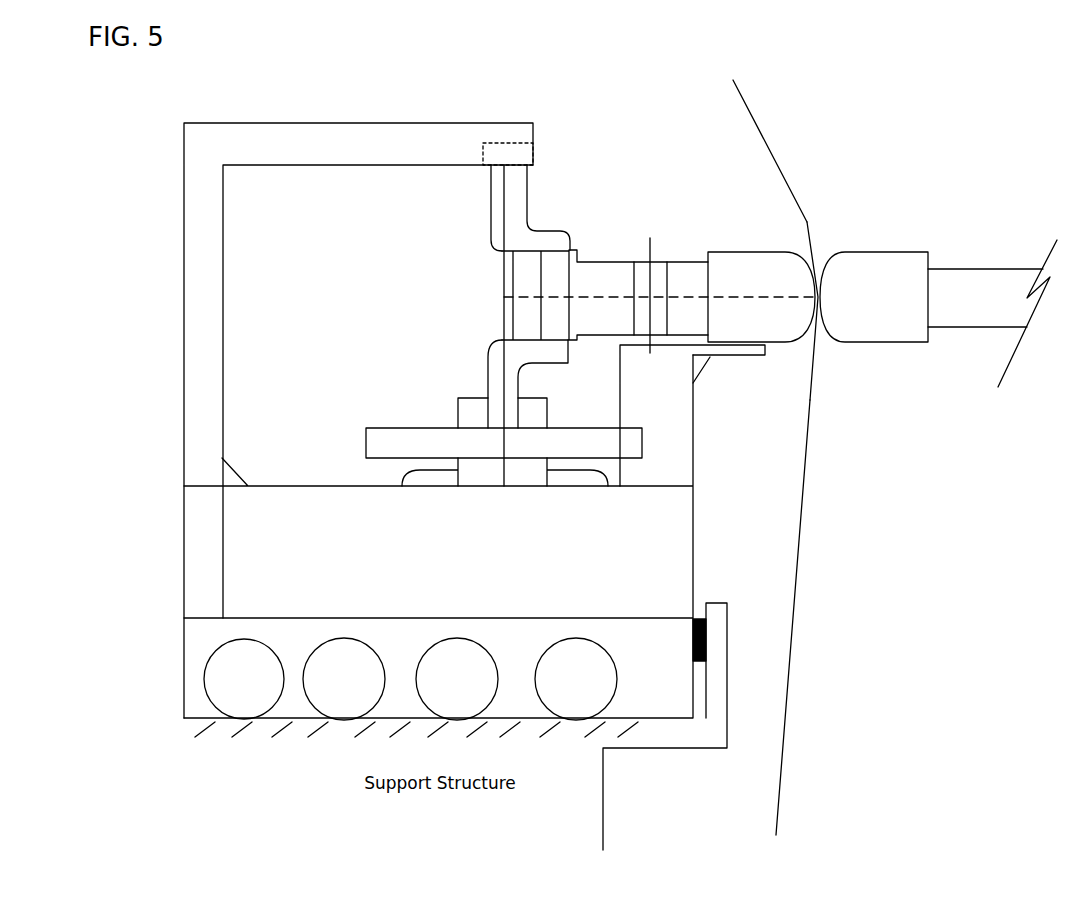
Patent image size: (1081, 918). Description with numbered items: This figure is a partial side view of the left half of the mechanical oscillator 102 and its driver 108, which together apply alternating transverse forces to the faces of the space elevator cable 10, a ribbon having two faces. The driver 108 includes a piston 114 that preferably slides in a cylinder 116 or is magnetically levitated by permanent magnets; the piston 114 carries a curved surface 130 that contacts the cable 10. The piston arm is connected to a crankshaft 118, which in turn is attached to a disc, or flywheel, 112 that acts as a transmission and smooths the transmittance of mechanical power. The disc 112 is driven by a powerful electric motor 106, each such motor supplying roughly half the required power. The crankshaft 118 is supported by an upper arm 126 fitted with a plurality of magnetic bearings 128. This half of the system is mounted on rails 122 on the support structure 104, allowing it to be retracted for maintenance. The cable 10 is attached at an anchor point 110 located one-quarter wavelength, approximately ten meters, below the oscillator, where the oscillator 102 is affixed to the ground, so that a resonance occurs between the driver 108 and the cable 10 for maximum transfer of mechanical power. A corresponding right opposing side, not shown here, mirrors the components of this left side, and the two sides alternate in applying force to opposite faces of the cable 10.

The cable 10 is at (768, 147).
The mechanical oscillator 102 is at (790, 421).
The support structure 104 is at (305, 808).
The electric motor 106 is at (483, 470).
The driver 108 is at (665, 170).
The anchor point 110 is at (848, 800).
The disc (flywheel) 112 is at (395, 442).
The piston 114 is at (781, 327).
The cylinder 116 is at (673, 247).
The crankshaft 118 is at (588, 223).
The rails 122 is at (612, 738).
The upper arm 126 is at (315, 138).
The magnetic bearings 128 is at (508, 143).
The curved surface 130 is at (820, 290).